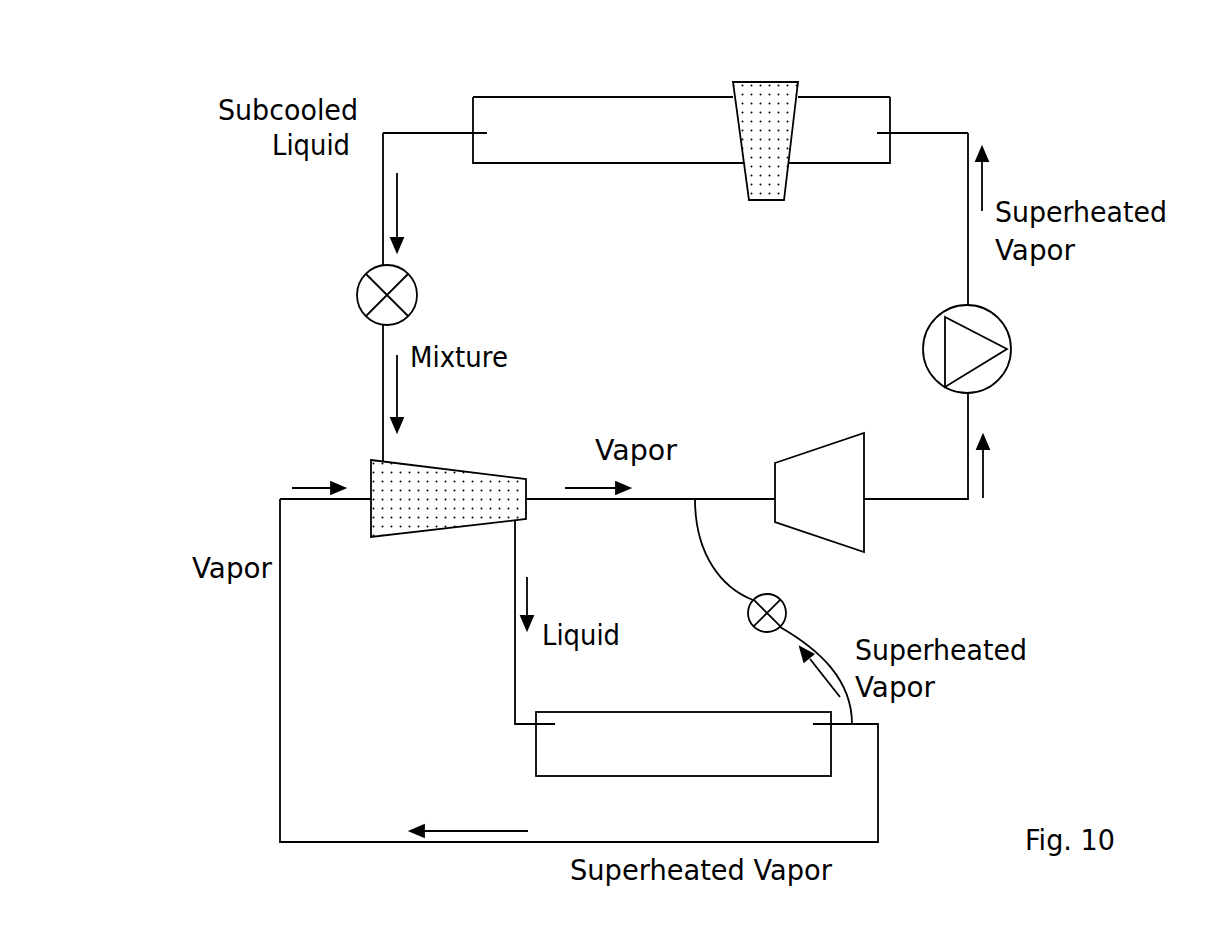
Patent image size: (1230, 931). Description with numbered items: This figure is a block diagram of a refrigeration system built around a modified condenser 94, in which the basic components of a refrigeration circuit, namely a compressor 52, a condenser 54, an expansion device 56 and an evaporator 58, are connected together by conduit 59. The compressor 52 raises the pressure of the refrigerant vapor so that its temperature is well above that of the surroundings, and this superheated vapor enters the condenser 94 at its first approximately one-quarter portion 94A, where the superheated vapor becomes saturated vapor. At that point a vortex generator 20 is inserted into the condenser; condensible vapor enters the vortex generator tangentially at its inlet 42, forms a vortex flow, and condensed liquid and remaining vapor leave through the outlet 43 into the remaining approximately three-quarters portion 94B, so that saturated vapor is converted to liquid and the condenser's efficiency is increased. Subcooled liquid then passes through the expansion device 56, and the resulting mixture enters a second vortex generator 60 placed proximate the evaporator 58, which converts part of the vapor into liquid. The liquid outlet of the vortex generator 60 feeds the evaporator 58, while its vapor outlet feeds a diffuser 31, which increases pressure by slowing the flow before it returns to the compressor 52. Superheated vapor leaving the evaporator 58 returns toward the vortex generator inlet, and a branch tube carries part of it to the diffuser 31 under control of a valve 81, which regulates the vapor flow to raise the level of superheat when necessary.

The modified condenser 94 is at (697, 152).
The condenser 54 is at (670, 158).
The outlet 43 is at (715, 92).
The inlet 42 is at (800, 96).
The vortex generator 20 is at (757, 90).
The condenser portion 94B is at (562, 133).
The condenser portion 94A is at (842, 122).
The conduit 59 is at (448, 133).
The expansion device 56 is at (305, 288).
The vortex generator 60 is at (447, 470).
The diffuser 31 is at (810, 447).
The compressor 52 is at (1055, 357).
The valve 81 is at (786, 604).
The evaporator 58 is at (617, 712).